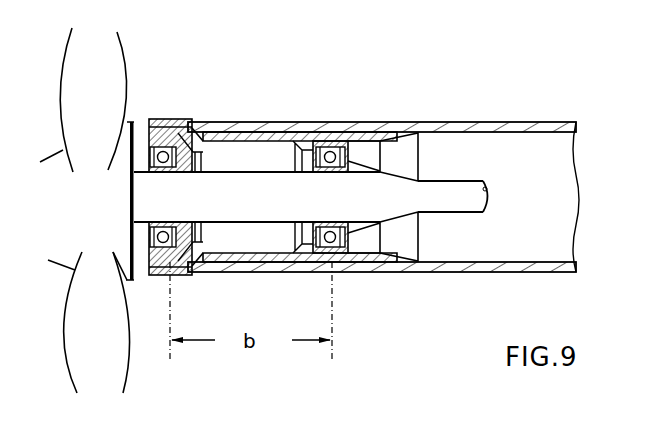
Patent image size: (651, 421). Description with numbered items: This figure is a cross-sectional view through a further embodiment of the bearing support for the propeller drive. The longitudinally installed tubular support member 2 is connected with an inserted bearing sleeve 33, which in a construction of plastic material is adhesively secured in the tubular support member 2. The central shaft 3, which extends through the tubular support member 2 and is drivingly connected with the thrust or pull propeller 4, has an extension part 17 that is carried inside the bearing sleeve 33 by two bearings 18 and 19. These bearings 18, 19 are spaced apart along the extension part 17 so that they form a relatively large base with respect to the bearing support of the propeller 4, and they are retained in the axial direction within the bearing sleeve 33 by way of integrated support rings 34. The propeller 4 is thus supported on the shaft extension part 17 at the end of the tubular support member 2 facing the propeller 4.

The tubular support member 2 is at (462, 122).
The central shaft 3 is at (456, 190).
The propeller 4 is at (115, 86).
The extension part 17 is at (227, 180).
The bearing 18 is at (167, 272).
The bearing 19 is at (338, 250).
The bearing sleeve 33 is at (262, 128).
The support rings 34 is at (316, 128).